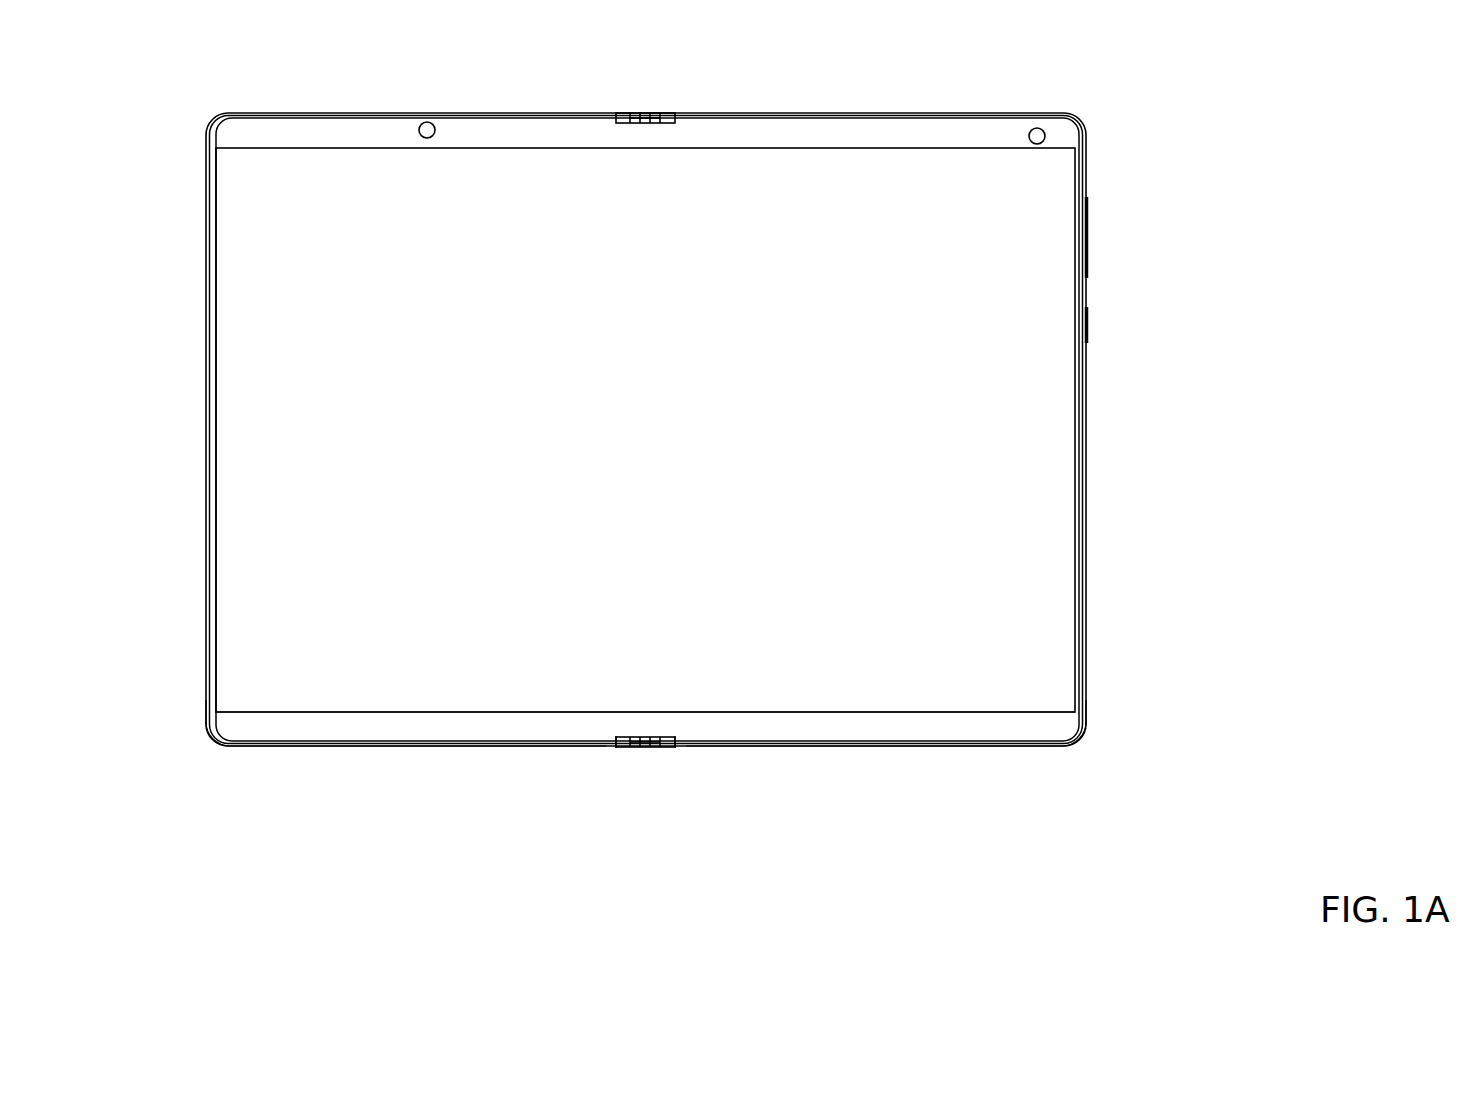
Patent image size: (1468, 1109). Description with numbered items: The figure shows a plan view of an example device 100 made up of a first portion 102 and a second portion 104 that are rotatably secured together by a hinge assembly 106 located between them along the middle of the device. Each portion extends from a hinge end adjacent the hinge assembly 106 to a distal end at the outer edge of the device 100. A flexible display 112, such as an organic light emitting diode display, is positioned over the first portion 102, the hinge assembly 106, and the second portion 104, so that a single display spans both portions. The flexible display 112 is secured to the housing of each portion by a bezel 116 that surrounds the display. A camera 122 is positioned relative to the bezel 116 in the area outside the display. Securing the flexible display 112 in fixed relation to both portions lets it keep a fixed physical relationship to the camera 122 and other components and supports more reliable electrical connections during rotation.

The device 100 is at (656, 387).
The first portion 102 is at (288, 103).
The second portion 104 is at (1048, 43).
The hinge assembly 106 is at (633, 100).
The flexible display 112 is at (238, 298).
The bezel 116 is at (868, 730).
The camera 122 is at (430, 121).